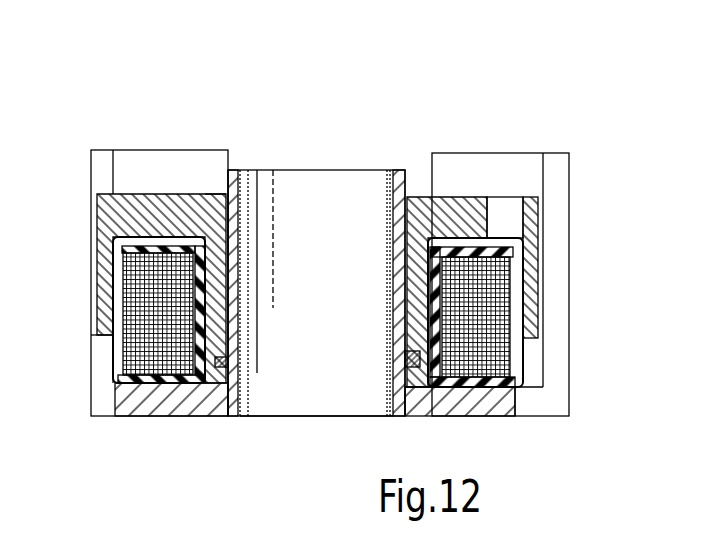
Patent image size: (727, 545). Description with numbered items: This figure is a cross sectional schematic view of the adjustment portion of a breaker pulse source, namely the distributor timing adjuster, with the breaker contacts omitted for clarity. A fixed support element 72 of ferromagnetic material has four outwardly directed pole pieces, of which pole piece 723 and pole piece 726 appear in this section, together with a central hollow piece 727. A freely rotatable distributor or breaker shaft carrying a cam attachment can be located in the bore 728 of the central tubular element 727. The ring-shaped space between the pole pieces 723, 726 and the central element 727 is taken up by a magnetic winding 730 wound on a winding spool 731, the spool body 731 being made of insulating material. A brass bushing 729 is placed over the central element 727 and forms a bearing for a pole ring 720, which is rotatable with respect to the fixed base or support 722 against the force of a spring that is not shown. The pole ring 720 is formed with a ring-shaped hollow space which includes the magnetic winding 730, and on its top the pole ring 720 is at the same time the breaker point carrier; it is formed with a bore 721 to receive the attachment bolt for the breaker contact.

The fixed support element 72 is at (323, 305).
The pole ring 720 is at (103, 220).
The bore 721 is at (515, 207).
The fixed base 722 is at (170, 408).
The pole piece 723 is at (132, 160).
The pole piece 726 is at (497, 163).
The central hollow piece 727 is at (402, 172).
The bore 728 is at (347, 403).
The brass bushing 729 is at (225, 194).
The magnetic winding 730 is at (138, 358).
The winding spool 731 is at (120, 376).